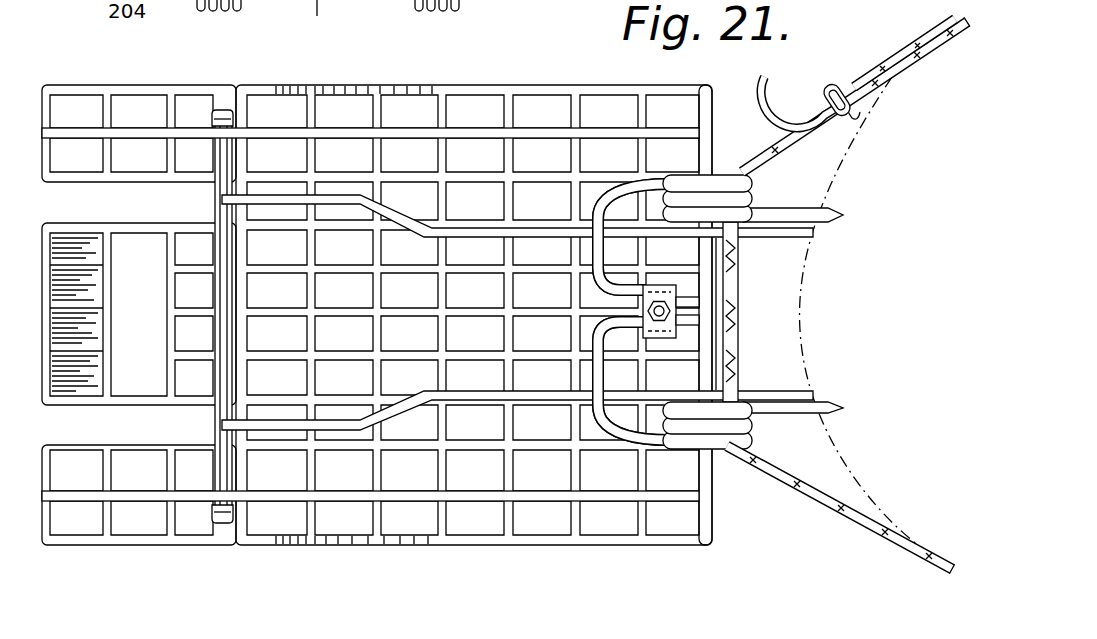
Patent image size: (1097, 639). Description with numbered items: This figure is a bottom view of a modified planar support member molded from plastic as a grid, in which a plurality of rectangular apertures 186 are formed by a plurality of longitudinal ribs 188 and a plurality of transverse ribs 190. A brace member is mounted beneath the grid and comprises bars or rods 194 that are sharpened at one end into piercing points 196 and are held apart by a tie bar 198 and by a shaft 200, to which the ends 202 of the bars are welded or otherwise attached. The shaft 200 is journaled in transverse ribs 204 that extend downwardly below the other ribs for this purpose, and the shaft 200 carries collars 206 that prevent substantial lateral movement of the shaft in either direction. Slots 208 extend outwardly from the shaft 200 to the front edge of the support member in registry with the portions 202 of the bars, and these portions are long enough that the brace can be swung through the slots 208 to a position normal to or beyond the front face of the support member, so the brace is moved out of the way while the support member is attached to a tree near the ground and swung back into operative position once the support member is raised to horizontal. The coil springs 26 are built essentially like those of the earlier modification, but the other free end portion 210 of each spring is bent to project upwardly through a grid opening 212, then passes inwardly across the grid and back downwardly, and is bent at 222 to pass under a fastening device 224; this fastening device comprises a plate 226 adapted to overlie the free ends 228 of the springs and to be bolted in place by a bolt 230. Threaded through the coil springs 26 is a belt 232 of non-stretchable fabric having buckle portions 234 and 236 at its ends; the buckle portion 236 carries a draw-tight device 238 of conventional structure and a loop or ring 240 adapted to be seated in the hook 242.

The coil springs 26 is at (752, 180).
The rectangular apertures 186 is at (534, 110).
The longitudinal ribs 188 is at (441, 92).
The transverse ribs 190 is at (320, 110).
The bars or rods 194 is at (759, 240).
The piercing points 196 is at (814, 233).
The tie bar 198 is at (688, 320).
The shaft 200 is at (214, 206).
The ends of the bars 202 is at (256, 200).
The transverse ribs 204 is at (185, 133).
The collars 206 is at (214, 110).
The slots 208 is at (118, 196).
The free end portion 210 is at (638, 177).
The grid opening 212 is at (590, 196).
The bend 222 is at (599, 293).
The fastening device 224 is at (354, 282).
The plate 226 is at (657, 285).
The free ends 228 is at (678, 300).
The bolt 230 is at (660, 337).
The belt 232 is at (790, 481).
The buckle portion 234 is at (893, 88).
The buckle portion 236 is at (843, 80).
The draw-tight device 238 is at (851, 108).
The loop or ring 240 is at (850, 92).
The hook 242 is at (870, 73).